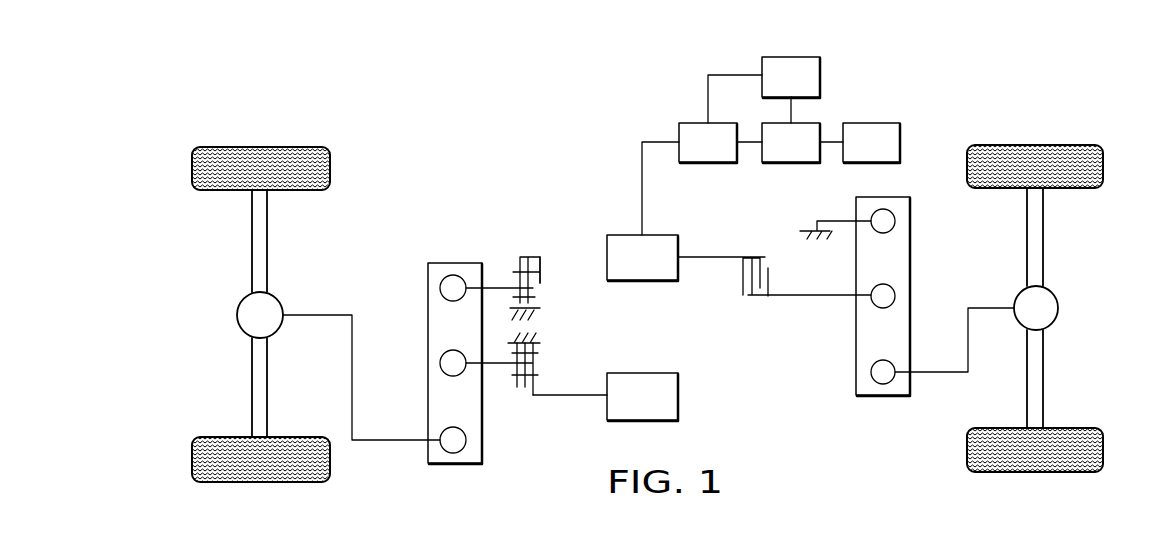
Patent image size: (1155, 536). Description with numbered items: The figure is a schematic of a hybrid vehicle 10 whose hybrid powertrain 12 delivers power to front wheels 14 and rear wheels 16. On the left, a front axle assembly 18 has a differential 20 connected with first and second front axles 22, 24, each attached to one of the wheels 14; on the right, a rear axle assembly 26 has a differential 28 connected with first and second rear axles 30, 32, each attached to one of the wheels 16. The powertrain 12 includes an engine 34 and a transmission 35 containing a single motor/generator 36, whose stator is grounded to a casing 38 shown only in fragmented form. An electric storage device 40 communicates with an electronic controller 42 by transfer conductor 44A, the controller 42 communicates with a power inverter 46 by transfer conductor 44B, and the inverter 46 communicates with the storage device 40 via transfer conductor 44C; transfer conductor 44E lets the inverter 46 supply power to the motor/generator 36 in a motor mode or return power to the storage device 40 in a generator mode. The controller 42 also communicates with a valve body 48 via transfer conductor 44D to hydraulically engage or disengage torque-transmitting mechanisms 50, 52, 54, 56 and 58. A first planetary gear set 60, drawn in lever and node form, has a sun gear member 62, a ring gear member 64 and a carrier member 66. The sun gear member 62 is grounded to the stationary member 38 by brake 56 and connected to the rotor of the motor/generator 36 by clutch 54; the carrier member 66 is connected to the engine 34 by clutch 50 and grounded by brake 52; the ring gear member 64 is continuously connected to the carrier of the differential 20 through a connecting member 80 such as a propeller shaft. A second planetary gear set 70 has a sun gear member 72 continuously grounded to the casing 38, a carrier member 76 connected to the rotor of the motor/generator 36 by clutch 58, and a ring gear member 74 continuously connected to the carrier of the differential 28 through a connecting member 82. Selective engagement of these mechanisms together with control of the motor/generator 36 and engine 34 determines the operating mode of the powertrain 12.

The hybrid vehicle 10 is at (400, 100).
The hybrid powertrain 12 is at (500, 190).
The front wheels 14 is at (260, 147).
The rear wheels 16 is at (1035, 145).
The front axle assembly 18 is at (305, 248).
The differential 20 is at (260, 315).
The first front axle 22 is at (252, 385).
The second front axle 24 is at (252, 243).
The rear axle assembly 26 is at (1010, 271).
The differential 28 is at (1036, 308).
The first rear axle 30 is at (1043, 380).
The second rear axle 32 is at (1043, 240).
The engine 34 is at (642, 397).
The transmission 35 is at (588, 188).
The motor/generator 36 is at (642, 258).
The casing 38 is at (545, 341).
The electric storage device 40 is at (791, 77).
The electronic controller 42 is at (791, 143).
The transfer conductor 44A is at (792, 110).
The transfer conductor 44B is at (749, 145).
The transfer conductor 44C is at (735, 74).
The transfer conductor 44D is at (831, 145).
The transfer conductor 44E is at (641, 190).
The power inverter 46 is at (708, 143).
The valve body 48 is at (871, 143).
The torque-transmitting mechanism 50 is at (512, 393).
The torque-transmitting mechanism 52 is at (545, 358).
The torque-transmitting mechanism 54 is at (505, 262).
The torque-transmitting mechanism 56 is at (547, 288).
The torque-transmitting mechanism 58 is at (772, 255).
The first planetary gear set 60 is at (428, 456).
The sun gear member 62 is at (441, 284).
The ring gear member 64 is at (467, 442).
The carrier member 66 is at (441, 368).
The second planetary gear set 70 is at (856, 342).
The sun gear member 72 is at (896, 221).
The ring gear member 74 is at (870, 372).
The carrier member 76 is at (896, 296).
The connecting member 80 is at (318, 314).
The connecting member 82 is at (938, 372).